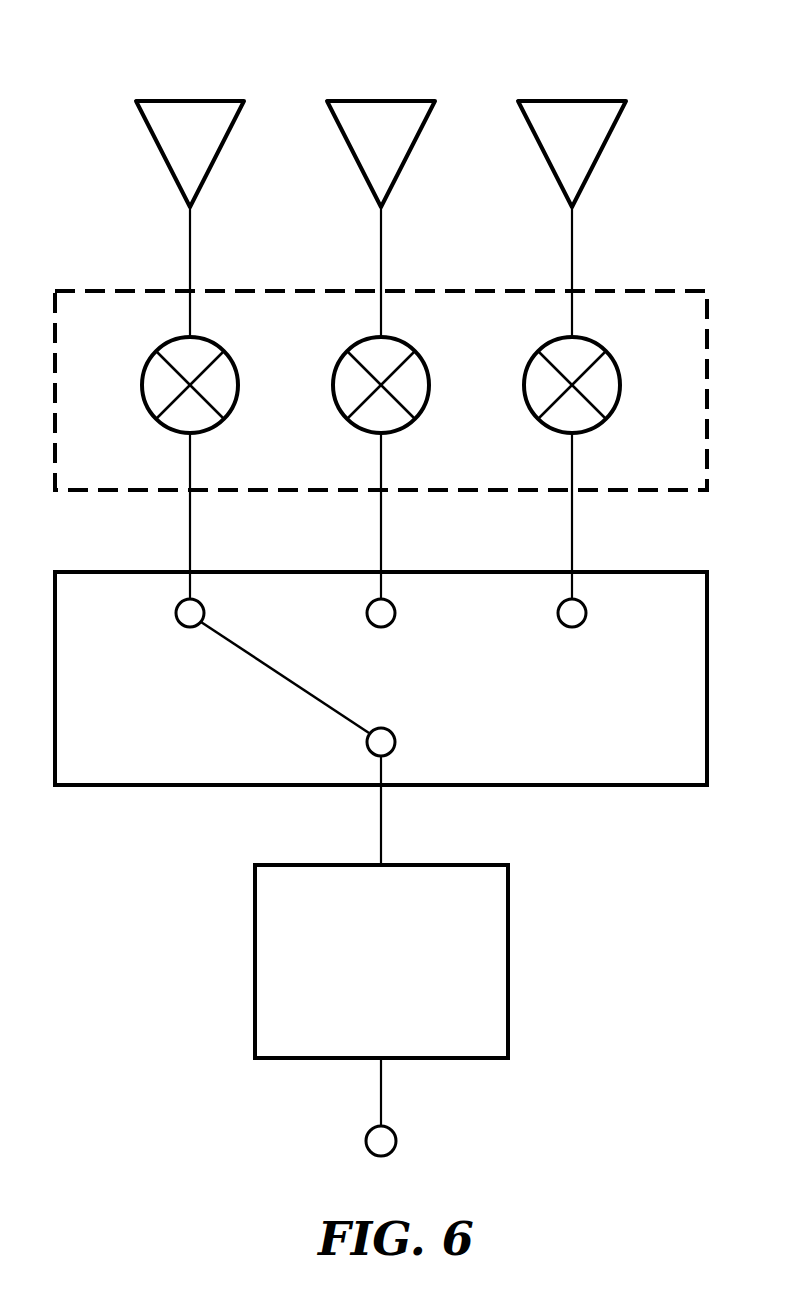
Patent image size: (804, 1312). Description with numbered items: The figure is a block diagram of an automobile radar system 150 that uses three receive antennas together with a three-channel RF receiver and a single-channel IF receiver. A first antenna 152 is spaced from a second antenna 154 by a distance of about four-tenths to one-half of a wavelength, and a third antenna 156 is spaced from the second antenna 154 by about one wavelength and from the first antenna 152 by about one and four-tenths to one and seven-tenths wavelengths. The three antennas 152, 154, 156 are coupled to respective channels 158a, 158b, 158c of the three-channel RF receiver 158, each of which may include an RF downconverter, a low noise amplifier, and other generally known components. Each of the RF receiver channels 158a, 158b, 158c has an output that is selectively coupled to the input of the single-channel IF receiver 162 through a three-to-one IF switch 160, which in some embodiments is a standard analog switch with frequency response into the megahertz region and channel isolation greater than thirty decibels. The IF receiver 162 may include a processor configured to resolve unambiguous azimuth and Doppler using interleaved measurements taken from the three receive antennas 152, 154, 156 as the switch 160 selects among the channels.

The radar system 150 is at (634, 61).
The first antenna 152 is at (168, 141).
The second antenna 154 is at (359, 141).
The third antenna 156 is at (550, 141).
The three-channel RF receiver 158 is at (128, 473).
The RF receiver channel 158a is at (208, 342).
The RF receiver channel 158b is at (399, 342).
The RF receiver channel 158c is at (584, 342).
The 3:1 IF switch 160 is at (120, 768).
The single-channel IF receiver 162 is at (359, 1034).